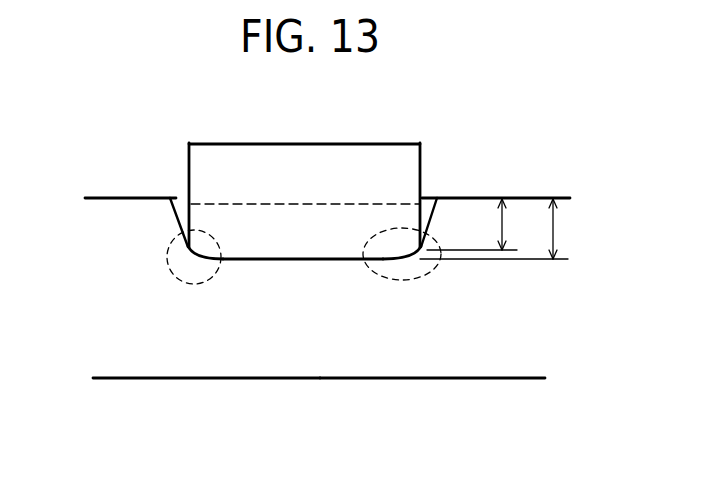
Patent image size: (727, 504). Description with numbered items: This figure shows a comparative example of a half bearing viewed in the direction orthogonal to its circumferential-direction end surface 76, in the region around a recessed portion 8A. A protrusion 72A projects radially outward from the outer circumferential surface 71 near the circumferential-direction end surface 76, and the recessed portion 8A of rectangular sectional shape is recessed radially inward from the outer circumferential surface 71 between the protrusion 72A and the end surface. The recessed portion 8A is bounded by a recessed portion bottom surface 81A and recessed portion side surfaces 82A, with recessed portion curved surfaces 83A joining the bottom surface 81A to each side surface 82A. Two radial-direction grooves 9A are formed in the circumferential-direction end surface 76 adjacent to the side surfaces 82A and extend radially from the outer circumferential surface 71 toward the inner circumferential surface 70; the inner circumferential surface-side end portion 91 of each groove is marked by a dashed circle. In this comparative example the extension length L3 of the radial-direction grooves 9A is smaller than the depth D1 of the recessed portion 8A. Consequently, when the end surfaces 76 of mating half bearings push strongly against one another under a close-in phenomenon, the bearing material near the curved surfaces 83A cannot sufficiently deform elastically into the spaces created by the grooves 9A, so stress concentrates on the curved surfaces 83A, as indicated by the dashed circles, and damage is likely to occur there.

The outer circumferential surface 71 is at (93, 196).
The protrusion 72A is at (243, 143).
The recessed portion bottom surface 81A is at (271, 258).
The recessed portion side surfaces 82A is at (191, 224).
The radial-direction grooves 9A is at (178, 207).
The recessed portion 8A is at (323, 232).
The recessed portion curved surfaces 83A is at (221, 262).
The inner circumferential surface-side end portion 91 is at (175, 268).
The inner circumferential surface 70 is at (132, 379).
The circumferential-direction end surface 76 is at (457, 360).
The extension length L3 is at (472, 224).
The depth D1 is at (494, 229).